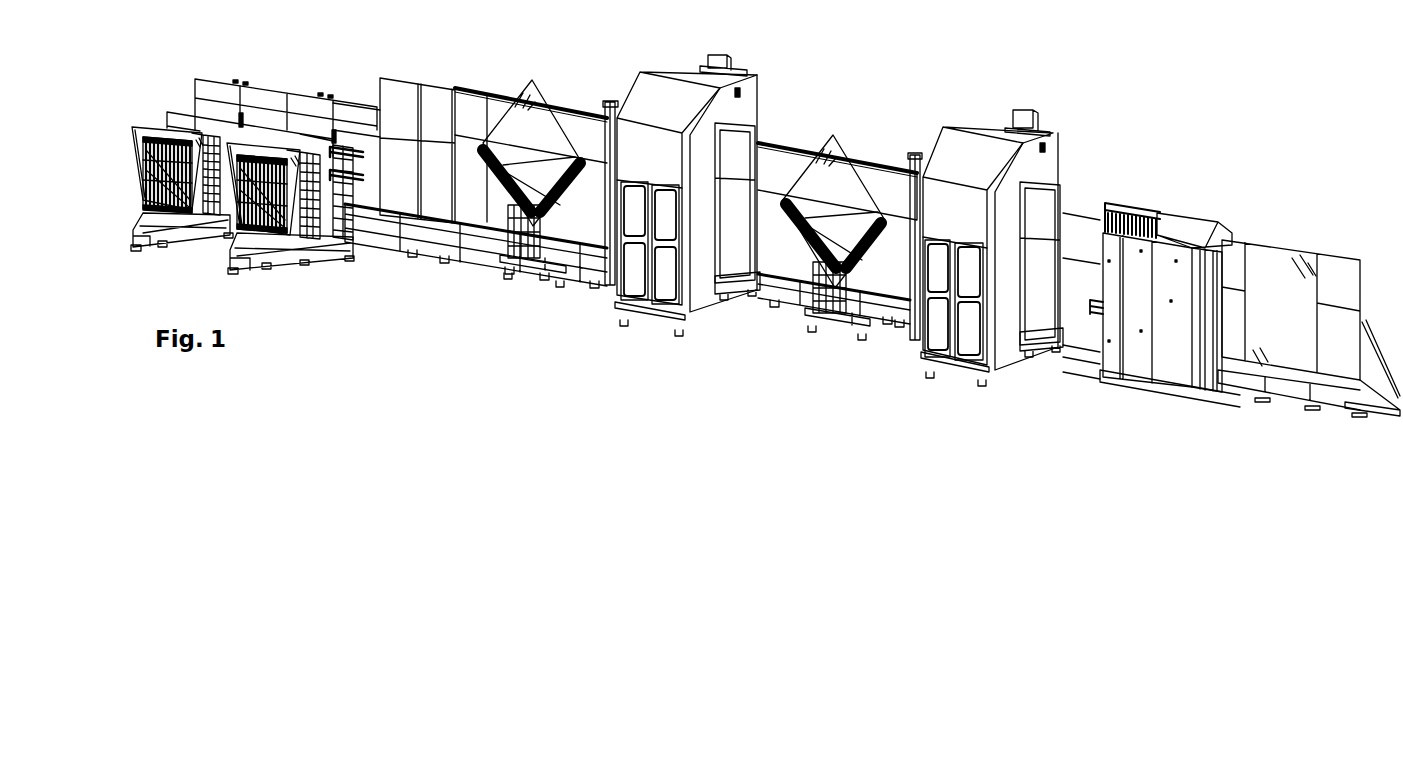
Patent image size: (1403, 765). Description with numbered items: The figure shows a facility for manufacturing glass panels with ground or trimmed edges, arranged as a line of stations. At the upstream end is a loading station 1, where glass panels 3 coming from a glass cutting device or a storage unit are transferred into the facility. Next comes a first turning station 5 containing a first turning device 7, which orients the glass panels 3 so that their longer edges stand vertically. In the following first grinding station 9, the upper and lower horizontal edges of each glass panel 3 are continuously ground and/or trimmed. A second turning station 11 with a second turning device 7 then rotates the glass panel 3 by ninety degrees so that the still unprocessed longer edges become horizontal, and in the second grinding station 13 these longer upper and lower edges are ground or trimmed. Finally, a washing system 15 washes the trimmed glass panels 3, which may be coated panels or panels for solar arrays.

The loading station 1 is at (290, 77).
The glass panels 3 is at (140, 133).
The first turning station 5 is at (545, 72).
The turning device 7 is at (551, 272).
The first grinding station 9 is at (722, 43).
The second turning station 11 is at (846, 121).
The second grinding station 13 is at (1011, 97).
The washing system 15 is at (1183, 189).